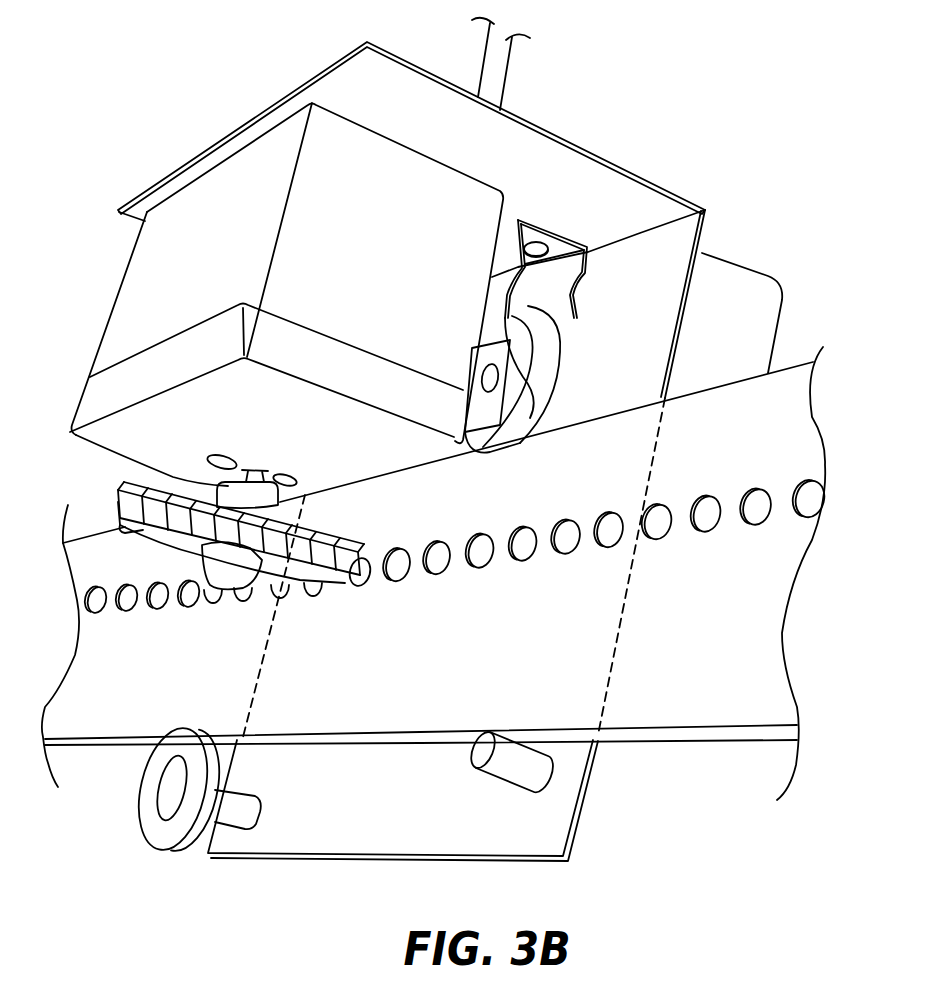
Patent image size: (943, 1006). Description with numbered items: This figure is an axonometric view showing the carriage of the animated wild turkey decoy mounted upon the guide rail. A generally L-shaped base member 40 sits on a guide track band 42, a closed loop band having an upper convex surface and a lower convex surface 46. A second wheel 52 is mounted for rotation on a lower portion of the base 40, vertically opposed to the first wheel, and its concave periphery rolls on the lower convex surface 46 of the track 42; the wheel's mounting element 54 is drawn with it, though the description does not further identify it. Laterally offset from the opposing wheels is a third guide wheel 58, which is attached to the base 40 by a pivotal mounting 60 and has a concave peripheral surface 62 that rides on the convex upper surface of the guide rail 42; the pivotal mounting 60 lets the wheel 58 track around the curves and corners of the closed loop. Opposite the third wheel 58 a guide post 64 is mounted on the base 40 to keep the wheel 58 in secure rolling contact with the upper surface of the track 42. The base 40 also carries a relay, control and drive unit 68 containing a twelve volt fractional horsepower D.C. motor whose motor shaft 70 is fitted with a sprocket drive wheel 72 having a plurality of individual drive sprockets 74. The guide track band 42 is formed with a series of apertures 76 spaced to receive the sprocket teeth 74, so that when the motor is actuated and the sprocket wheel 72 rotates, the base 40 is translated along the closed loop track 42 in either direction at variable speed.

The base member 40 is at (709, 209).
The guide track band 42 is at (788, 633).
The lower convex surface 46 is at (676, 745).
The second wheel 52 is at (148, 850).
The bolt 54 is at (172, 850).
The third guide wheel 58 is at (560, 377).
The pivotal mounting 60 is at (547, 242).
The concave peripheral surface 62 is at (520, 417).
The guide post 64 is at (463, 758).
The relay, control and drive unit 68 is at (110, 303).
The motor shaft 70 is at (252, 470).
The sprocket drive wheel 72 is at (150, 540).
The drive sprockets 74 is at (333, 540).
The apertures 76 is at (436, 582).